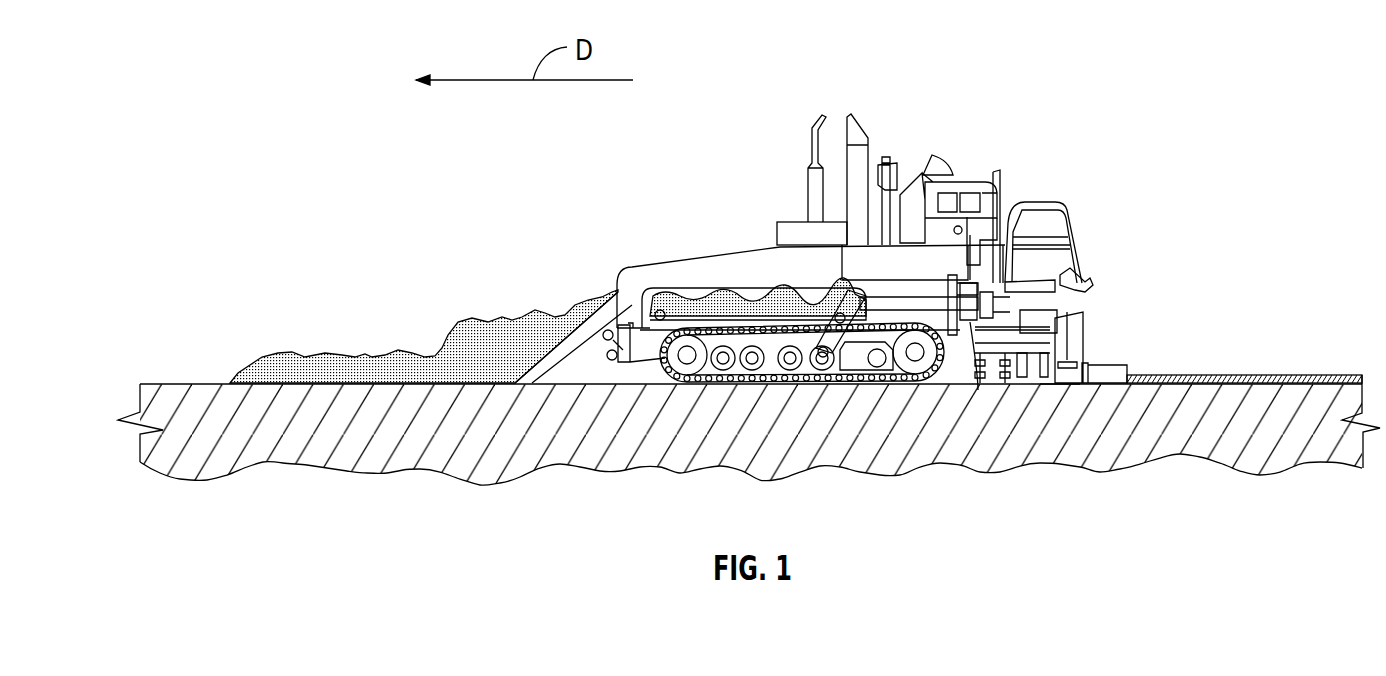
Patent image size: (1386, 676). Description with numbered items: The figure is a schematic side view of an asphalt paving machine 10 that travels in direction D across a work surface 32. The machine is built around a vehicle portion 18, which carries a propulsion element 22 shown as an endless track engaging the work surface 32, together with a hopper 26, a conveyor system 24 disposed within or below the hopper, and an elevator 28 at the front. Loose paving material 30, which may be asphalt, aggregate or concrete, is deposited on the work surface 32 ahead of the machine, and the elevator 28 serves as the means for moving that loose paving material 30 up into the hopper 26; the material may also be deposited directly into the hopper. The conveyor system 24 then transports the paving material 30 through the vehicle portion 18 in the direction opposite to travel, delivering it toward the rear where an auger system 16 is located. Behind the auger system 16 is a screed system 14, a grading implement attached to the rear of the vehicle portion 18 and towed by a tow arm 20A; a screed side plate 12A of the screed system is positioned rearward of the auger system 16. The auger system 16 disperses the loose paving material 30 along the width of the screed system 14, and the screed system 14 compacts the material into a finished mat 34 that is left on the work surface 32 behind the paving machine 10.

The asphalt paving machine 10 is at (1140, 66).
The screed side plate 12A is at (1072, 333).
The screed system 14 is at (1057, 395).
The auger system 16 is at (963, 322).
The vehicle portion 18 is at (760, 236).
The tow arm 20A is at (905, 303).
The propulsion element 22 is at (915, 352).
The conveyor system 24 is at (723, 315).
The hopper 26 is at (717, 252).
The elevator 28 is at (560, 350).
The loose paving material 30 is at (288, 350).
The work surface 32 is at (180, 384).
The mat 34 is at (1268, 376).